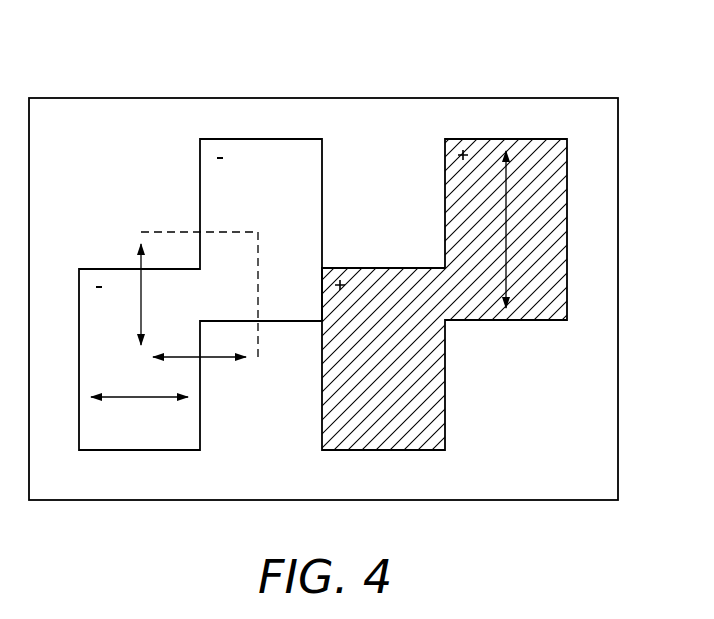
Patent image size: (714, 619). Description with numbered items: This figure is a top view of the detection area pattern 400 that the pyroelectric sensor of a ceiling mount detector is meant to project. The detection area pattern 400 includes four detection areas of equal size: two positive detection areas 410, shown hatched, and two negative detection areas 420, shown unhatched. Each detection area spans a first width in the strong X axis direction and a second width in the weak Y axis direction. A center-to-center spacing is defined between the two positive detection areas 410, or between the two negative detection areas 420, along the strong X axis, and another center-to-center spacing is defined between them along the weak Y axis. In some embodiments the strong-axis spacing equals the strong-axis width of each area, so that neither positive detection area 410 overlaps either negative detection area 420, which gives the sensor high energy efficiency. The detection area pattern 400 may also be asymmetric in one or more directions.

The detection area pattern 400 is at (613, 75).
The positive detection area 410 is at (545, 320).
The negative detection area 420 is at (308, 139).